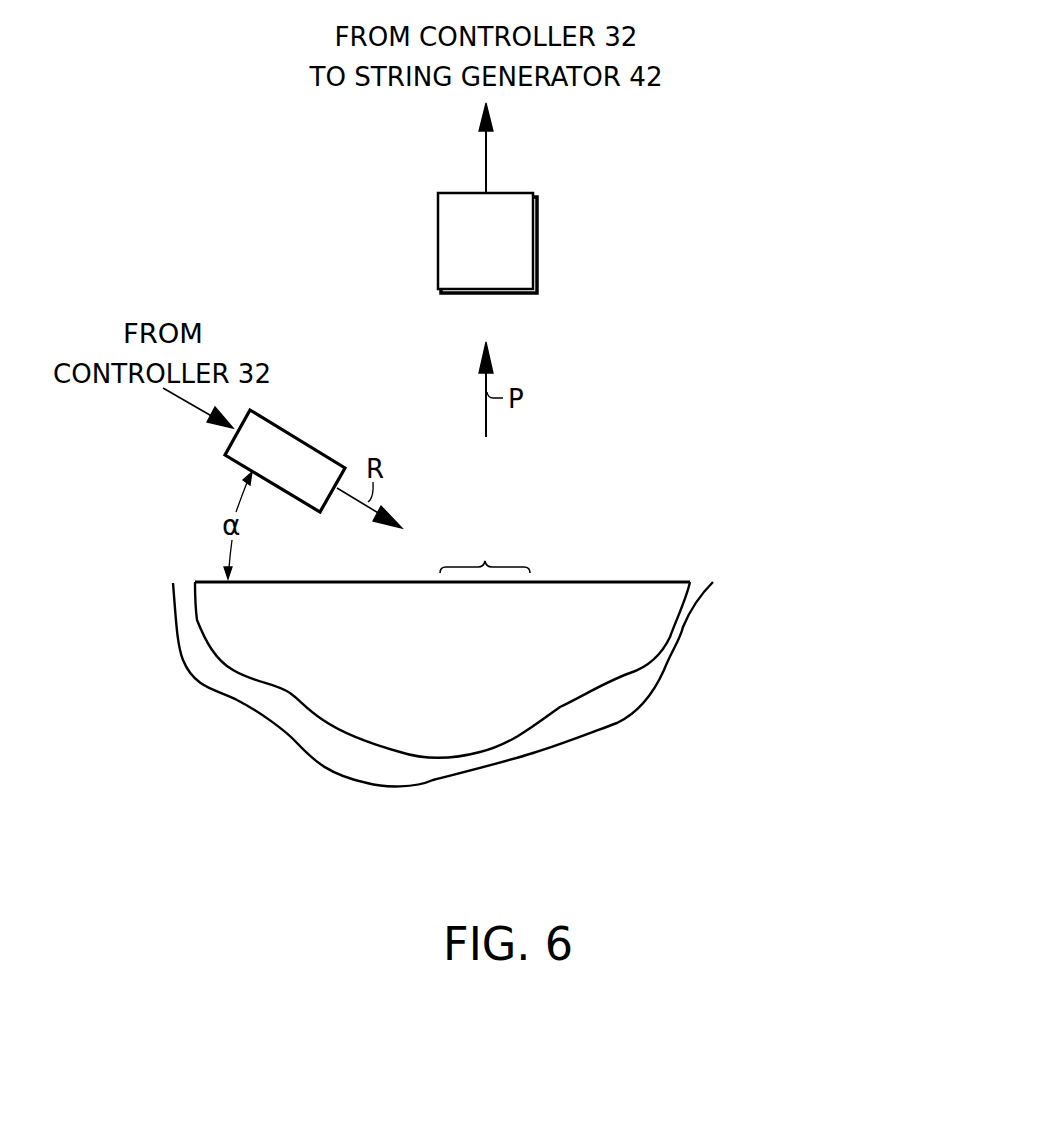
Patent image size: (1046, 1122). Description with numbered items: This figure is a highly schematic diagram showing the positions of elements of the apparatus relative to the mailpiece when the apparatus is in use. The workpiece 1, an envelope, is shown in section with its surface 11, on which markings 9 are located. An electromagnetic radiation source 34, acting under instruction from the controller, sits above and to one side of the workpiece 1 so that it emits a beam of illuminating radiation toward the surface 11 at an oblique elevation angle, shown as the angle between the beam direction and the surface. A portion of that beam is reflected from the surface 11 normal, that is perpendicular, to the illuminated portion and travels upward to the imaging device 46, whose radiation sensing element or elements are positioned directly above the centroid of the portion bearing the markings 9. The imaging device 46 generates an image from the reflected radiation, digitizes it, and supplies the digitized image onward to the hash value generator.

The workpiece 1 is at (657, 582).
The markings 9 is at (485, 550).
The surface 11 is at (562, 582).
The electromagnetic radiation source 34 is at (287, 428).
The imaging device 46 is at (510, 193).